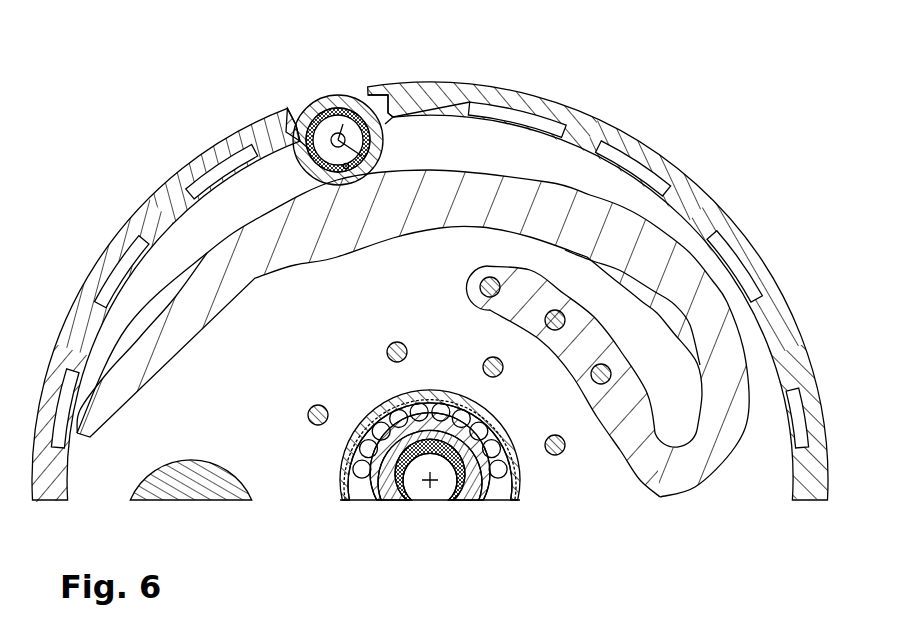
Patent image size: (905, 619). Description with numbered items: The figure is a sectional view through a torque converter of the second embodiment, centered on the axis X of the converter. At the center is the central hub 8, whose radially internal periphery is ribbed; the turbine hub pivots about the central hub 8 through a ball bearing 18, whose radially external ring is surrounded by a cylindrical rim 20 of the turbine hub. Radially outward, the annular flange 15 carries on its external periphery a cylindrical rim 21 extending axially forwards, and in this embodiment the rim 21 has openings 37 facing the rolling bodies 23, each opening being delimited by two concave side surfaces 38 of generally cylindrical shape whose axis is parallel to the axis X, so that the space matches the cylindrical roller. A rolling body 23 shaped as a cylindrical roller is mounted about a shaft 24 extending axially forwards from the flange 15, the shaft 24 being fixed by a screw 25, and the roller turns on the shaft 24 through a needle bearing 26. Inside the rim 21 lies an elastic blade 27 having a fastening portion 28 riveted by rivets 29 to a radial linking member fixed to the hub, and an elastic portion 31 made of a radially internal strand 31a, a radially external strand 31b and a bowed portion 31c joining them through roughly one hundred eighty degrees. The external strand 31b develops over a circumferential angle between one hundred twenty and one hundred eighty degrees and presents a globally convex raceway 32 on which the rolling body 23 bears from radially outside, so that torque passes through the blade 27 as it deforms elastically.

The central hub 8 is at (462, 505).
The annular flange 15 is at (430, 277).
The ball bearing 18 is at (496, 488).
The cylindrical rim 20 is at (520, 478).
The cylindrical rim 21 is at (567, 122).
The rolling body 23 is at (325, 106).
The shaft 24 is at (348, 110).
The screw 25 is at (334, 134).
The needle bearing 26 is at (276, 120).
The elastic blade 27 is at (466, 289).
The fastening portion 28 is at (597, 340).
The rivet 29 is at (613, 374).
The elastic portion 31 is at (466, 289).
The radially internal strand 31a is at (617, 427).
The radially external strand 31b is at (482, 190).
The bowed portion 31c is at (700, 462).
The raceway 32 is at (424, 86).
The opening 37 is at (285, 100).
The concave side surface 38 is at (300, 142).
The axis X is at (434, 494).